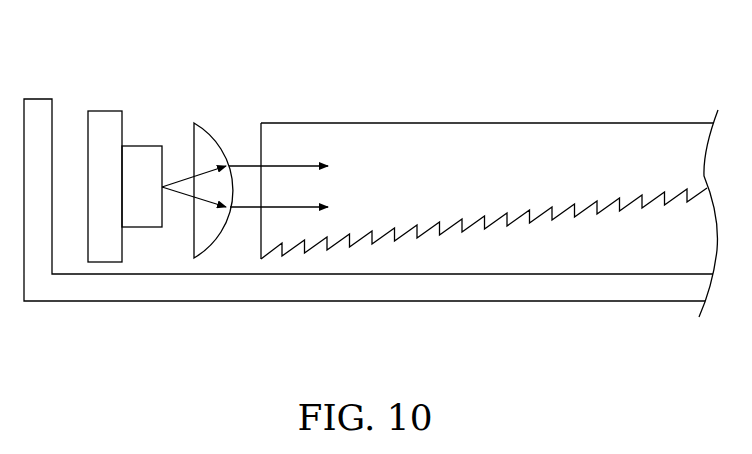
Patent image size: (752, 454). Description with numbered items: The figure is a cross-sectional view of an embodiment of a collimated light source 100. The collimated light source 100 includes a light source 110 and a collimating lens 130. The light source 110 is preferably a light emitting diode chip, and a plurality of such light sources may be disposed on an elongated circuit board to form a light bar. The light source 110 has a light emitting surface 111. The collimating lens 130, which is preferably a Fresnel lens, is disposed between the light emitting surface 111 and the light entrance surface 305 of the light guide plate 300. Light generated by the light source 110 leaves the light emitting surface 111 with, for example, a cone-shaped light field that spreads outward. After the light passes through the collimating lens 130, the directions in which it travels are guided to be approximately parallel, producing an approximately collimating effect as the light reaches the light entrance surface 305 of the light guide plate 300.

The collimated light source 100 is at (213, 48).
The light source 110 is at (143, 145).
The light emitting surface 111 is at (162, 214).
The collimating lens 130 is at (208, 134).
The light guide plate 300 is at (523, 150).
The light entrance surface 305 is at (261, 133).